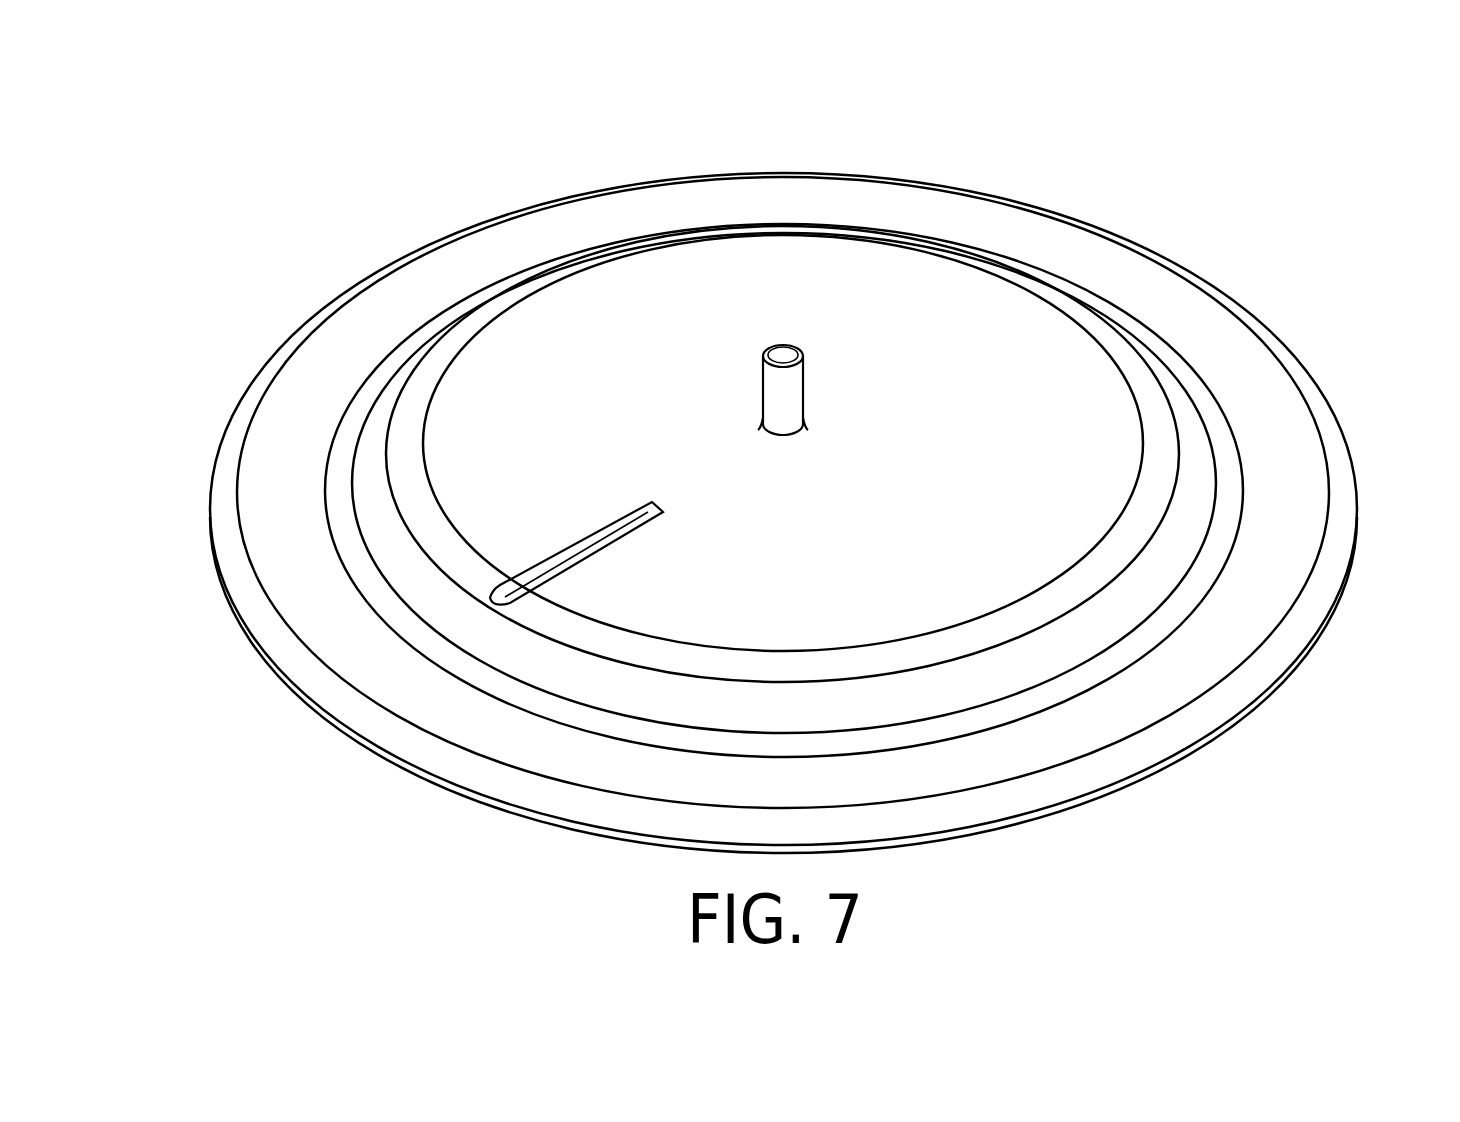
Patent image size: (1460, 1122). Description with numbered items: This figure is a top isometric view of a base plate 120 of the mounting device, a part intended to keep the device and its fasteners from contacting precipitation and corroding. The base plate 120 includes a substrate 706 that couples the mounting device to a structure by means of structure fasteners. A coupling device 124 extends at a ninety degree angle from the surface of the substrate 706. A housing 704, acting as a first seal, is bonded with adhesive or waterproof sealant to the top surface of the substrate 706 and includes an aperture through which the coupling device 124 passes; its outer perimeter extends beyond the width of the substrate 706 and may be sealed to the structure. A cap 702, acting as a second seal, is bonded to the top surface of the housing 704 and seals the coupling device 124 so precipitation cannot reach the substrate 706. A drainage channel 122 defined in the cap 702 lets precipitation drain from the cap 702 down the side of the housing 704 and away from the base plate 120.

The base plate 120 is at (181, 93).
The drainage channel 122 is at (489, 600).
The coupling device 124 is at (773, 390).
The cap 702 is at (592, 457).
The housing 704 is at (296, 473).
The substrate 706 is at (1263, 705).